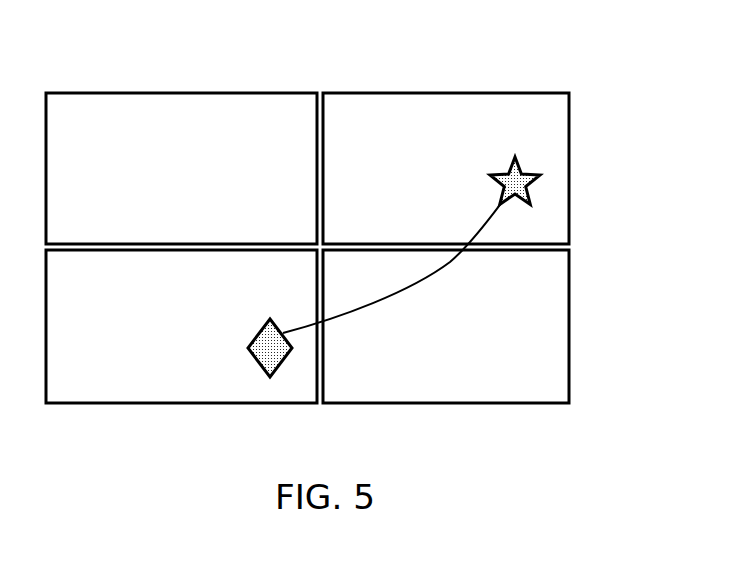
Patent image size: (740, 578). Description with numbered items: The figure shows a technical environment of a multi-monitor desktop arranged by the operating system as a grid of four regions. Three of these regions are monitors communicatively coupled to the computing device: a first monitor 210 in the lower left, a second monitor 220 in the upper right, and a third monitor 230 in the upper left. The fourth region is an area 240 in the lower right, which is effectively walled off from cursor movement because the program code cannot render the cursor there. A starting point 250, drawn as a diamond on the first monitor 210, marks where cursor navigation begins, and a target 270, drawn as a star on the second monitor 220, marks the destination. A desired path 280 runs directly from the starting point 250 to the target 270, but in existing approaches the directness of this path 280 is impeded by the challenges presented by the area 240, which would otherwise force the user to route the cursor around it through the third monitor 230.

The first monitor 210 is at (127, 302).
The second monitor 220 is at (404, 142).
The third monitor 230 is at (127, 142).
The area 240 is at (527, 368).
The starting point 250 is at (258, 362).
The target 270 is at (532, 173).
The desired path 280 is at (483, 227).